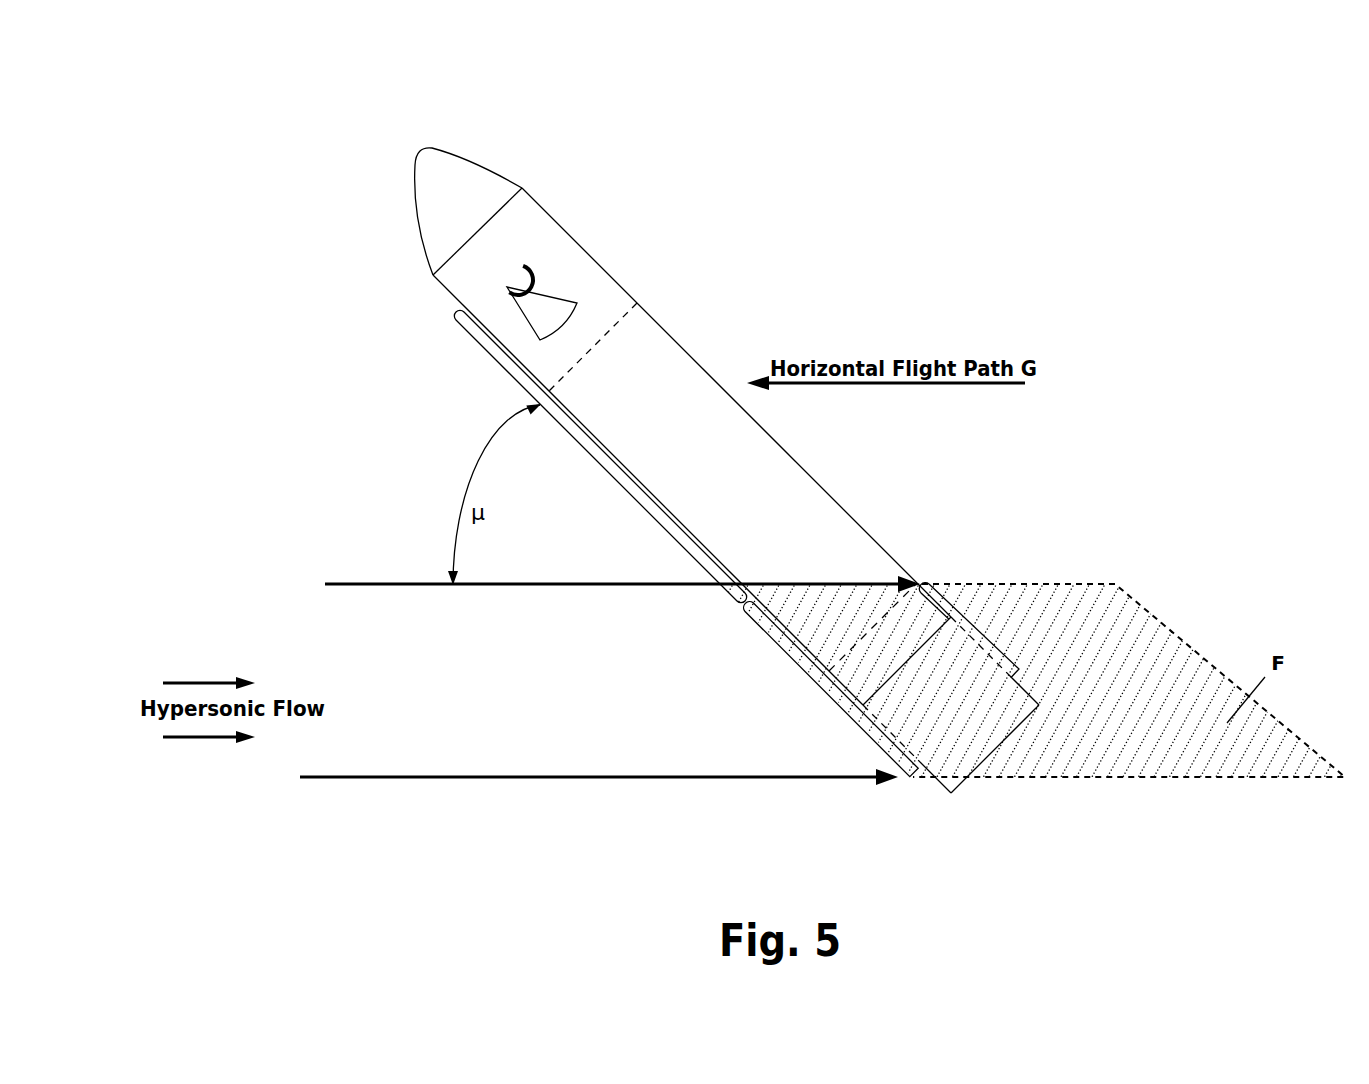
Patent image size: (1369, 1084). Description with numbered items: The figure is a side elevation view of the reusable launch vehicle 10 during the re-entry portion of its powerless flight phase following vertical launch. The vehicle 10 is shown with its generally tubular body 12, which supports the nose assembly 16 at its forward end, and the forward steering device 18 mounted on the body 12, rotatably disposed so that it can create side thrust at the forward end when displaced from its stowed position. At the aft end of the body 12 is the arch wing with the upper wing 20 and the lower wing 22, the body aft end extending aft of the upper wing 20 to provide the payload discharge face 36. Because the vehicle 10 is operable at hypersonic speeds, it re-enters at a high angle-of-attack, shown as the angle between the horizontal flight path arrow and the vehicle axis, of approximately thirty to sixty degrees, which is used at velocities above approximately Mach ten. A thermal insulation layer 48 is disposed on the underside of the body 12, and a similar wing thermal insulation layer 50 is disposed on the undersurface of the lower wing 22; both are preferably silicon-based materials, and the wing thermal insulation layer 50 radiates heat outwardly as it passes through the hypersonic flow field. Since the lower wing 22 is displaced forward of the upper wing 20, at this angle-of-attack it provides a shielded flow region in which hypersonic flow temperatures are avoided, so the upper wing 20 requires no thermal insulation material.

The reusable launch vehicle 10 is at (712, 257).
The body 12 is at (605, 297).
The nose assembly 16 is at (472, 180).
The forward steering device 18 is at (543, 295).
The upper wing 20 is at (970, 632).
The lower wing 22 is at (810, 667).
The payload discharge face 36 is at (993, 747).
The thermal insulation layer 48 is at (485, 347).
The wing thermal insulation layer 50 is at (773, 642).